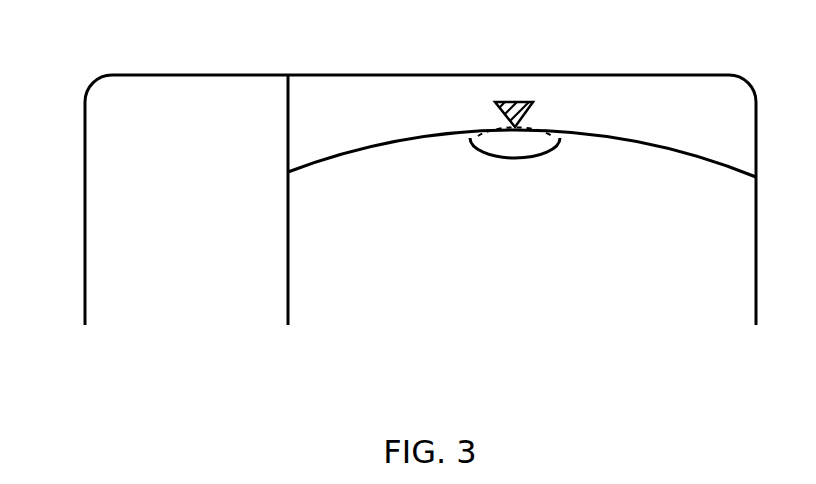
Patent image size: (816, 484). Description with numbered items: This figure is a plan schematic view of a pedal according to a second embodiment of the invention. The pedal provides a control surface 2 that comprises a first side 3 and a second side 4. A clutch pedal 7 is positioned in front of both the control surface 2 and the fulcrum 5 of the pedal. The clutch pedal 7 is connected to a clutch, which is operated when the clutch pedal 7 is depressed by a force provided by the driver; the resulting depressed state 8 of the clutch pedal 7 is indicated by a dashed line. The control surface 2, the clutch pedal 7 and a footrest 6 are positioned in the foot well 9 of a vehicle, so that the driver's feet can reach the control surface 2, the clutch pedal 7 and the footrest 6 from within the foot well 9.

The control surface 2 is at (615, 126).
The first side 3 is at (697, 153).
The second side 4 is at (342, 150).
The fulcrum 5 is at (517, 101).
The footrest 6 is at (128, 176).
The clutch pedal 7 is at (547, 148).
The depressed state 8 is at (481, 130).
The foot well 9 is at (503, 288).